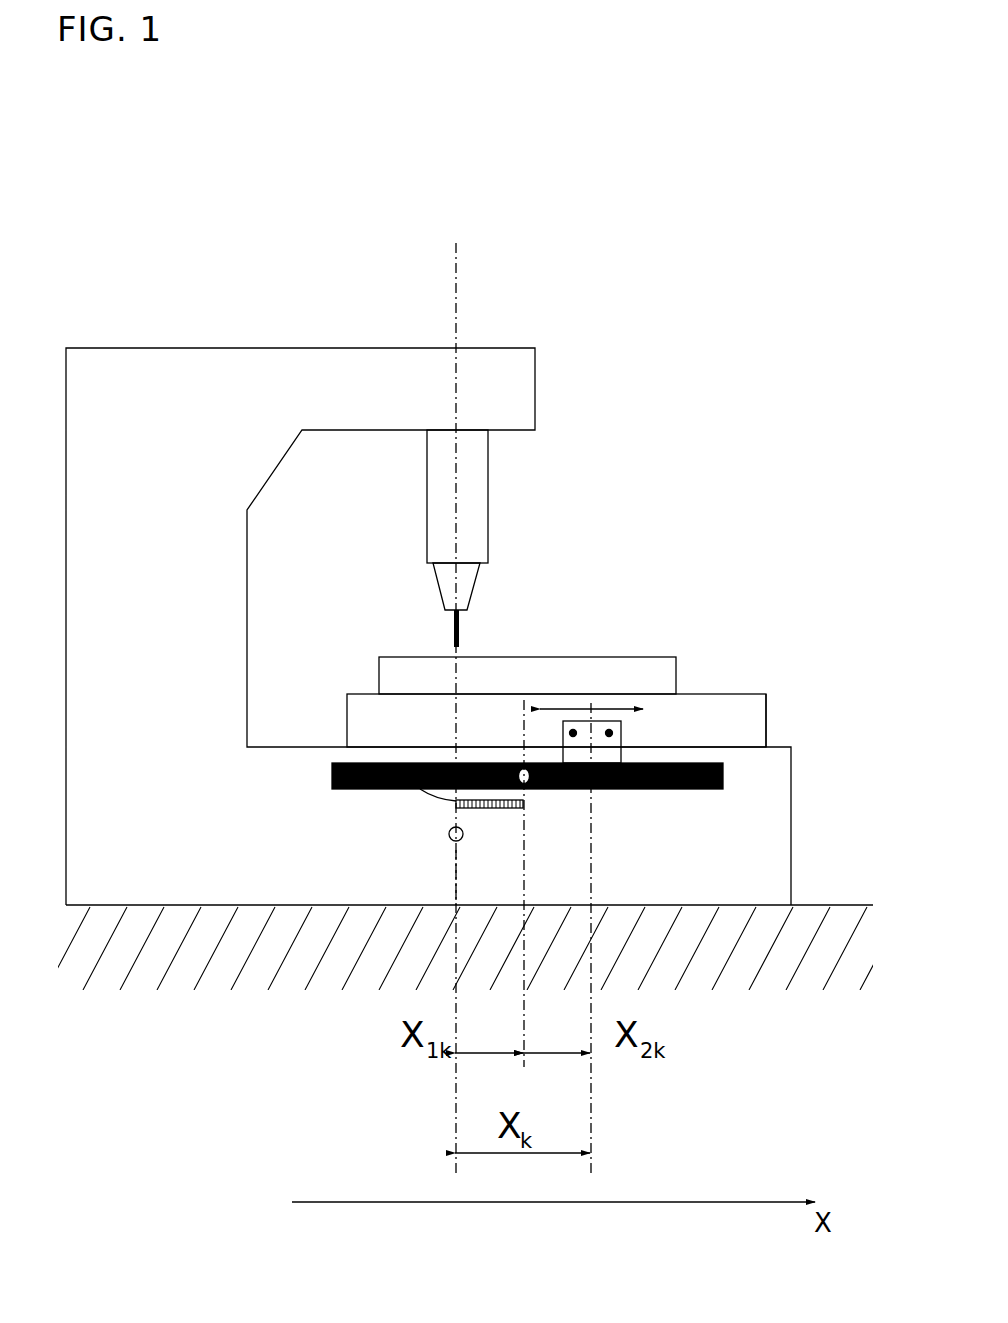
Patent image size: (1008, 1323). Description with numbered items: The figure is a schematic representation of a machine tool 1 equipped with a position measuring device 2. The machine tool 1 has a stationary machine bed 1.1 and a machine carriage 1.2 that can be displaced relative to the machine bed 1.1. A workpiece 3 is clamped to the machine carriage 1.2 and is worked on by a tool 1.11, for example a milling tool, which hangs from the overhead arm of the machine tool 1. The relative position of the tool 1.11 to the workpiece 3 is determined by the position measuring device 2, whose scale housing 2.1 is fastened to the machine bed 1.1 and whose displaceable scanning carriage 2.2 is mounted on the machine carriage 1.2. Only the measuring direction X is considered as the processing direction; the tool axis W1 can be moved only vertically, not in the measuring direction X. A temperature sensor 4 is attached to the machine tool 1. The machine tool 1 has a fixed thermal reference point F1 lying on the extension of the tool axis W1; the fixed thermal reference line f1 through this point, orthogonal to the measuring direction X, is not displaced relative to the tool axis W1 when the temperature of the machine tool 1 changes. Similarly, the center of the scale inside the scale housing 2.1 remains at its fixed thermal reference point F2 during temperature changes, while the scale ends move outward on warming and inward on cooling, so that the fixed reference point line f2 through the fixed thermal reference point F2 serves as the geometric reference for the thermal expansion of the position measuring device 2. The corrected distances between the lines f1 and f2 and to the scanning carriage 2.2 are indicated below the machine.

The machine tool 1 is at (226, 340).
The machine bed 1.1 is at (762, 847).
The tool 1.11 is at (461, 627).
The machine carriage 1.2 is at (748, 705).
The position measuring device 2 is at (635, 737).
The scale housing 2.1 is at (723, 775).
The scanning carriage 2.2 is at (599, 728).
The workpiece 3 is at (607, 665).
The temperature sensor 4 is at (388, 762).
The tool axis W1 is at (484, 708).
The fixed thermal reference point F1 is at (450, 837).
The fixed thermal reference point F2 is at (531, 790).
The fixed thermal reference line f1 is at (455, 877).
The fixed reference point line f2 is at (525, 858).